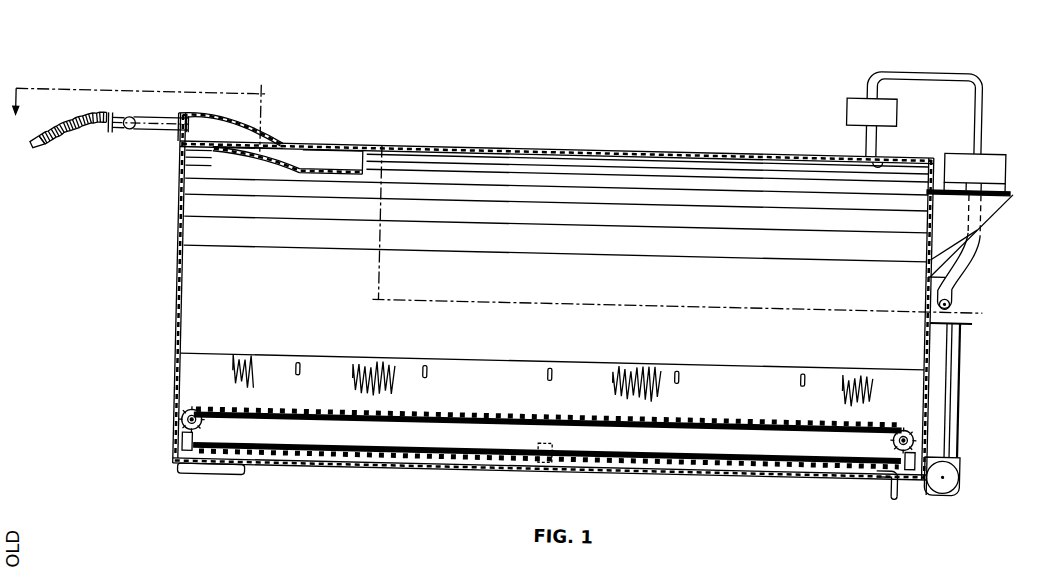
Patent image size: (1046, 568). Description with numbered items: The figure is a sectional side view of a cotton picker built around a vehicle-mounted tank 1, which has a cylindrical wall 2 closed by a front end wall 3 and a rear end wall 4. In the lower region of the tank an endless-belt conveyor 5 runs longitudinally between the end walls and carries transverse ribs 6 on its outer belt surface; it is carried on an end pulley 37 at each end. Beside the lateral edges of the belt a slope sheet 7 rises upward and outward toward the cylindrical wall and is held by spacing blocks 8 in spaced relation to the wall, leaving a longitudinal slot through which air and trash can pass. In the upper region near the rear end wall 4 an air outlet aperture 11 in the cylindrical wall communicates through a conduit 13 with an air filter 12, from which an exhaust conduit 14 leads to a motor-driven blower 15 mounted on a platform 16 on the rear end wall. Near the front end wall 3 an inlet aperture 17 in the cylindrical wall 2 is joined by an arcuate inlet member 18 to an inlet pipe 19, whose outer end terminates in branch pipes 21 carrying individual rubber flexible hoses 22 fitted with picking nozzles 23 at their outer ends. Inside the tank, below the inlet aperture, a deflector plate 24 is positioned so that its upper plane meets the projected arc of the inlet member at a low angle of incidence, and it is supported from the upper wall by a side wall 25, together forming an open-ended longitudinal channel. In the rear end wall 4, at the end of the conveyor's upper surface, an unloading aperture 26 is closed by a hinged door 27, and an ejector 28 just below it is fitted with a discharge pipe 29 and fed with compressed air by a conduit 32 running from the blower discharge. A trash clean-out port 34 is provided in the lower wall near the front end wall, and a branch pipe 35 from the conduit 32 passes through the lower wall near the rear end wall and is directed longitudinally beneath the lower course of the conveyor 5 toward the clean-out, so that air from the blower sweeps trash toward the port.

The tank 1 is at (563, 136).
The cylindrical wall 2 is at (986, 308).
The front end wall 3 is at (178, 291).
The rear end wall 4 is at (956, 265).
The endless-belt conveyor 5 is at (186, 419).
The transverse ribs 6 is at (190, 407).
The slope sheet 7 is at (180, 363).
The spacing blocks 8 is at (305, 360).
The air outlet aperture 11 is at (883, 139).
The air filter 12 is at (846, 93).
The conduit 13 is at (866, 117).
The exhaust conduit 14 is at (866, 64).
The blower 15 is at (1006, 150).
The platform 16 is at (1014, 176).
The inlet aperture 17 is at (243, 135).
The arcuate inlet member 18 is at (210, 110).
The inlet pipe 19 is at (145, 131).
The branch pipes 21 is at (112, 132).
The flexible hoses 22 is at (73, 135).
The picking nozzles 23 is at (40, 151).
The deflector plate 24 is at (300, 157).
The side wall 25 is at (335, 157).
The unloading aperture 26 is at (937, 386).
The hinged door 27 is at (935, 366).
The ejector 28 is at (968, 460).
The discharge pipe 29 is at (966, 412).
The conduit 32 is at (955, 286).
The trash clean-out port 34 is at (201, 473).
The branch pipe 35 is at (908, 482).
The end pulley 37 is at (202, 424).